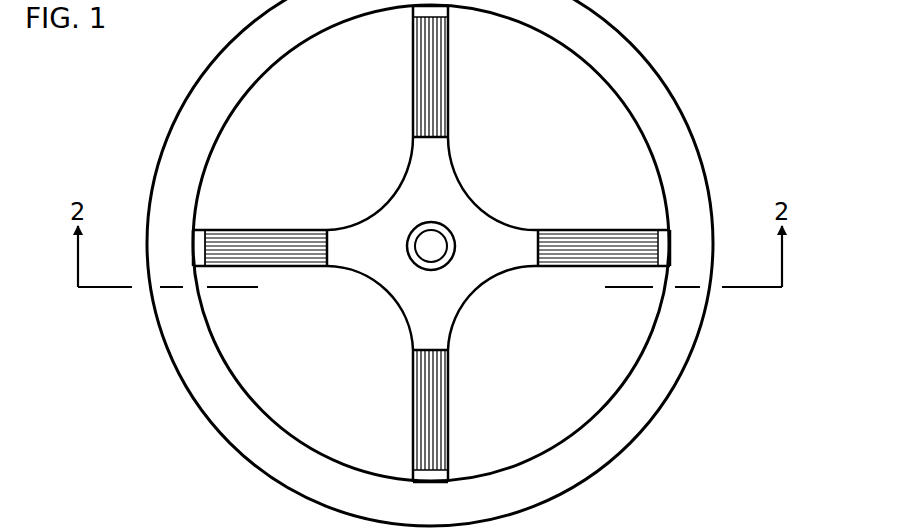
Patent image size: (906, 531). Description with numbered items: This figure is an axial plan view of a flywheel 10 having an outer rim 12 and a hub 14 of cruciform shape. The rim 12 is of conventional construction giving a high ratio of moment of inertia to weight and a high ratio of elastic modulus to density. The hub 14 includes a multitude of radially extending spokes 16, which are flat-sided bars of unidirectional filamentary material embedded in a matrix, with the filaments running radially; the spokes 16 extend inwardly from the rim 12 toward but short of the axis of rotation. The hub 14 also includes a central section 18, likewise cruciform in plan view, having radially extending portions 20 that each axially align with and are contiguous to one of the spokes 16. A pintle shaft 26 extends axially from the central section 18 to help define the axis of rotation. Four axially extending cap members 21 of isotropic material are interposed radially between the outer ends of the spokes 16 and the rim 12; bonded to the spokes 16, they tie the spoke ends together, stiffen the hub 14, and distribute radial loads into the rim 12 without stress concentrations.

The flywheel 10 is at (465, 263).
The rim 12 is at (652, 382).
The hub 14 is at (508, 185).
The spokes 16 is at (420, 108).
The central section 18 is at (448, 182).
The radially extending portions 20 is at (412, 148).
The cap members 21 is at (438, 8).
The pintle shaft 26 is at (412, 238).